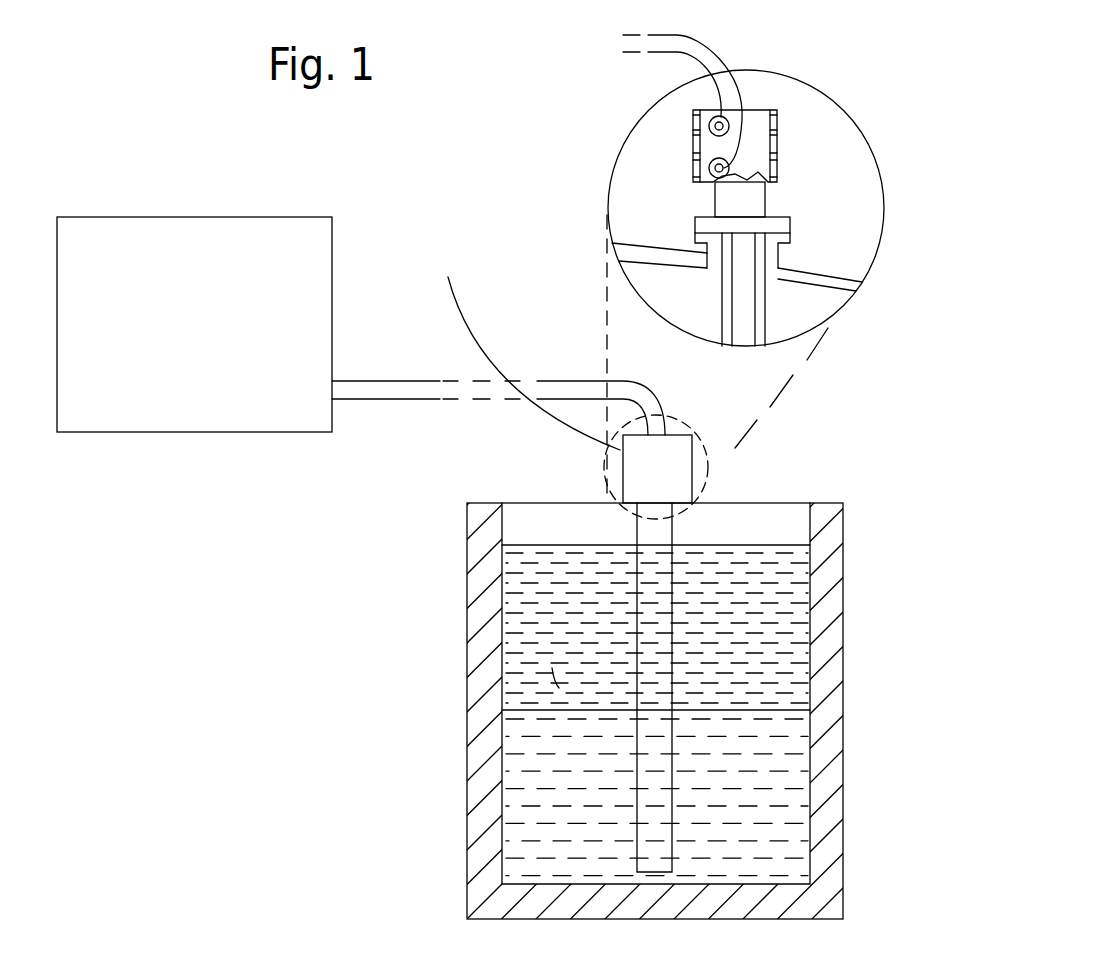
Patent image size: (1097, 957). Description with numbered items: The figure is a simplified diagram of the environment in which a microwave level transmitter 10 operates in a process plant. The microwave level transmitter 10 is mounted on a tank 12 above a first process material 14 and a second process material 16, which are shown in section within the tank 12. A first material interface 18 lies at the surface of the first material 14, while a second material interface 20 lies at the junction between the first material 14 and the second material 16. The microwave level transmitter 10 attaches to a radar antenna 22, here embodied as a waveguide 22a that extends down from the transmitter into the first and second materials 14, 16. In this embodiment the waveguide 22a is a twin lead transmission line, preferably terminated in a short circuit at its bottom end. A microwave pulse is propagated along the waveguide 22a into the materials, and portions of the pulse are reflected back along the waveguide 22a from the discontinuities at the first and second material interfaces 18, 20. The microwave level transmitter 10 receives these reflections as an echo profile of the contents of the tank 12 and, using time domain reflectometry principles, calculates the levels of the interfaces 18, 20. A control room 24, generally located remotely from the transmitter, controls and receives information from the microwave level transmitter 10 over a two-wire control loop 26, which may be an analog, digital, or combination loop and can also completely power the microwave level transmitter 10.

The microwave level transmitter 10 is at (623, 485).
The tank 12 is at (465, 657).
The first process material 14 is at (515, 589).
The second process material 16 is at (518, 876).
The first material interface 18 is at (520, 545).
The second material interface 20 is at (518, 712).
The radar antenna 22 is at (637, 828).
The waveguide 22a is at (717, 278).
The control room 24 is at (183, 433).
The control loop 26 is at (383, 398).